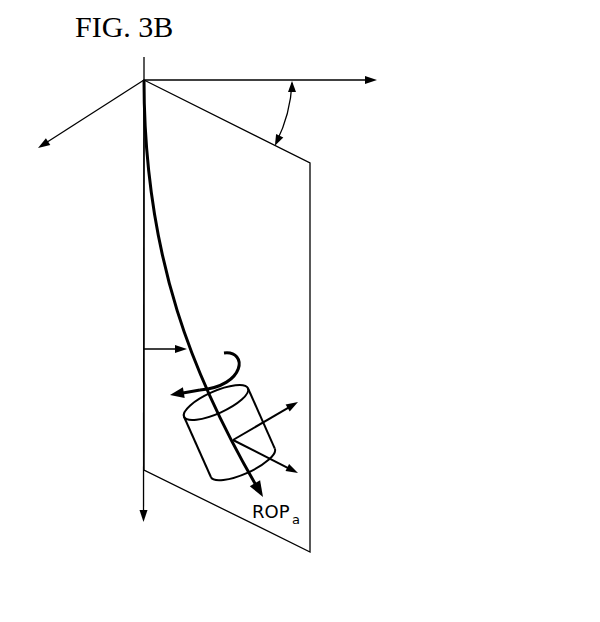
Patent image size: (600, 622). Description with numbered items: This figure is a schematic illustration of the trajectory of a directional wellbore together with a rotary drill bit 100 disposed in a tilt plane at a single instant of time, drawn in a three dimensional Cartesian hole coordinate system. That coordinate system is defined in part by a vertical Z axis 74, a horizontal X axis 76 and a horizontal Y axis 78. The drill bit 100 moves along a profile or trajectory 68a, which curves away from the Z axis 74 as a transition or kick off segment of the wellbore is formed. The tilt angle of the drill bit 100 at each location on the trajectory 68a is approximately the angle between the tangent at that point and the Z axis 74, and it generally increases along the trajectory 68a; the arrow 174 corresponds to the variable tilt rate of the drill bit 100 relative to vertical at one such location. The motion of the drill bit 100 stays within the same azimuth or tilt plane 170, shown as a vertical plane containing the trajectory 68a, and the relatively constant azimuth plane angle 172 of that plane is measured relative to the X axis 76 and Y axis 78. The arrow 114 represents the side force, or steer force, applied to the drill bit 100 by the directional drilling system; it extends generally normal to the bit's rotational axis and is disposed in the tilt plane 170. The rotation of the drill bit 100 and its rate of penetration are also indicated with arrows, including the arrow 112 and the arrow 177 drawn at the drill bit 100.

The X axis 76 is at (252, 80).
The Y axis 78 is at (97, 110).
The Z axis 74 is at (143, 487).
The tilt plane 170 is at (311, 290).
The azimuth plane angle 172 is at (290, 115).
The trajectory 68a is at (155, 200).
The rotary drill bit 100 is at (193, 455).
The rotation (RPM) of drill bit 112 is at (240, 351).
The arrow 174 is at (162, 347).
The rate of penetration direction vector 177 is at (278, 422).
The side force 114 is at (278, 455).